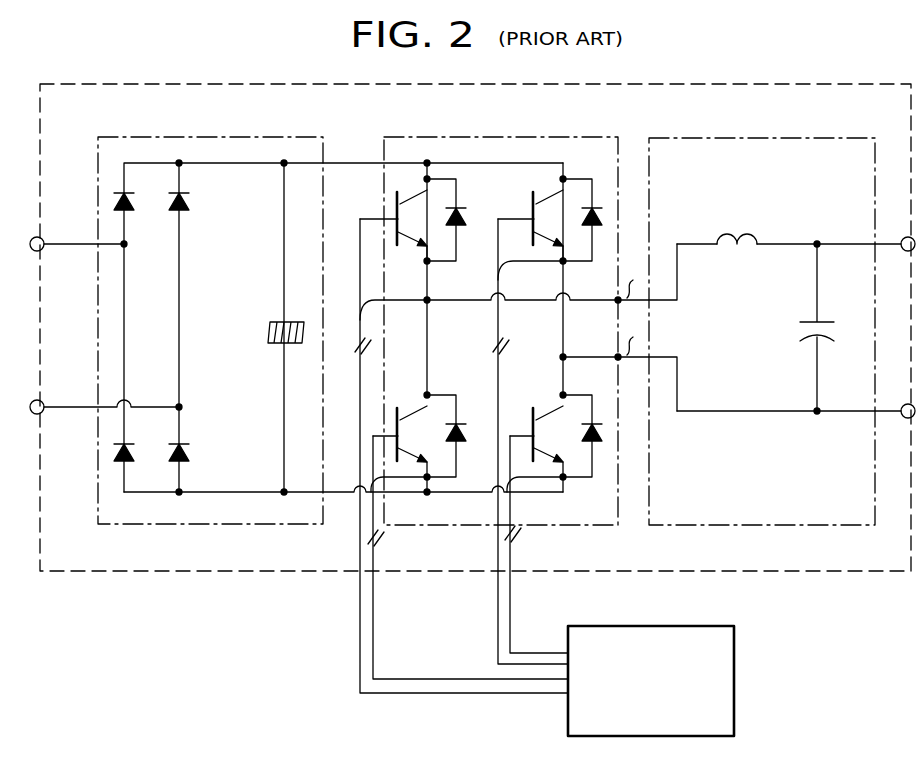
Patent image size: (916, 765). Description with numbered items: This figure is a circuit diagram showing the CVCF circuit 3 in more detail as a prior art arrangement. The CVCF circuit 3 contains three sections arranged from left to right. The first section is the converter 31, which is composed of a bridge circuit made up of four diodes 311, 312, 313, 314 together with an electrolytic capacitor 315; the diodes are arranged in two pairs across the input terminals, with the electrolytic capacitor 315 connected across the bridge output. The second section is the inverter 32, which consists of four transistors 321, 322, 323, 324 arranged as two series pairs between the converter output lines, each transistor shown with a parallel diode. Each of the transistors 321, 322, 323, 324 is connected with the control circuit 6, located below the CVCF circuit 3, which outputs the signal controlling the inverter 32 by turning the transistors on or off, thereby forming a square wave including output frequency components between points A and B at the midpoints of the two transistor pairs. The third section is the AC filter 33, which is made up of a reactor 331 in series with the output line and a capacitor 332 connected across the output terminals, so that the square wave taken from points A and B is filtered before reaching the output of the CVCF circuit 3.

The CVCF circuit 3 is at (735, 84).
The converter 31 is at (229, 137).
The diode 311 is at (135, 201).
The diode 312 is at (188, 198).
The diode 313 is at (119, 465).
The diode 314 is at (190, 452).
The electrolytic capacitor 315 is at (266, 332).
The inverter 32 is at (510, 138).
The transistor 321 is at (413, 220).
The transistor 322 is at (418, 443).
The transistor 323 is at (550, 228).
The transistor 324 is at (554, 442).
The AC filter 33 is at (750, 138).
The reactor 331 is at (742, 238).
The capacitor 332 is at (800, 333).
The control circuit 6 is at (735, 683).